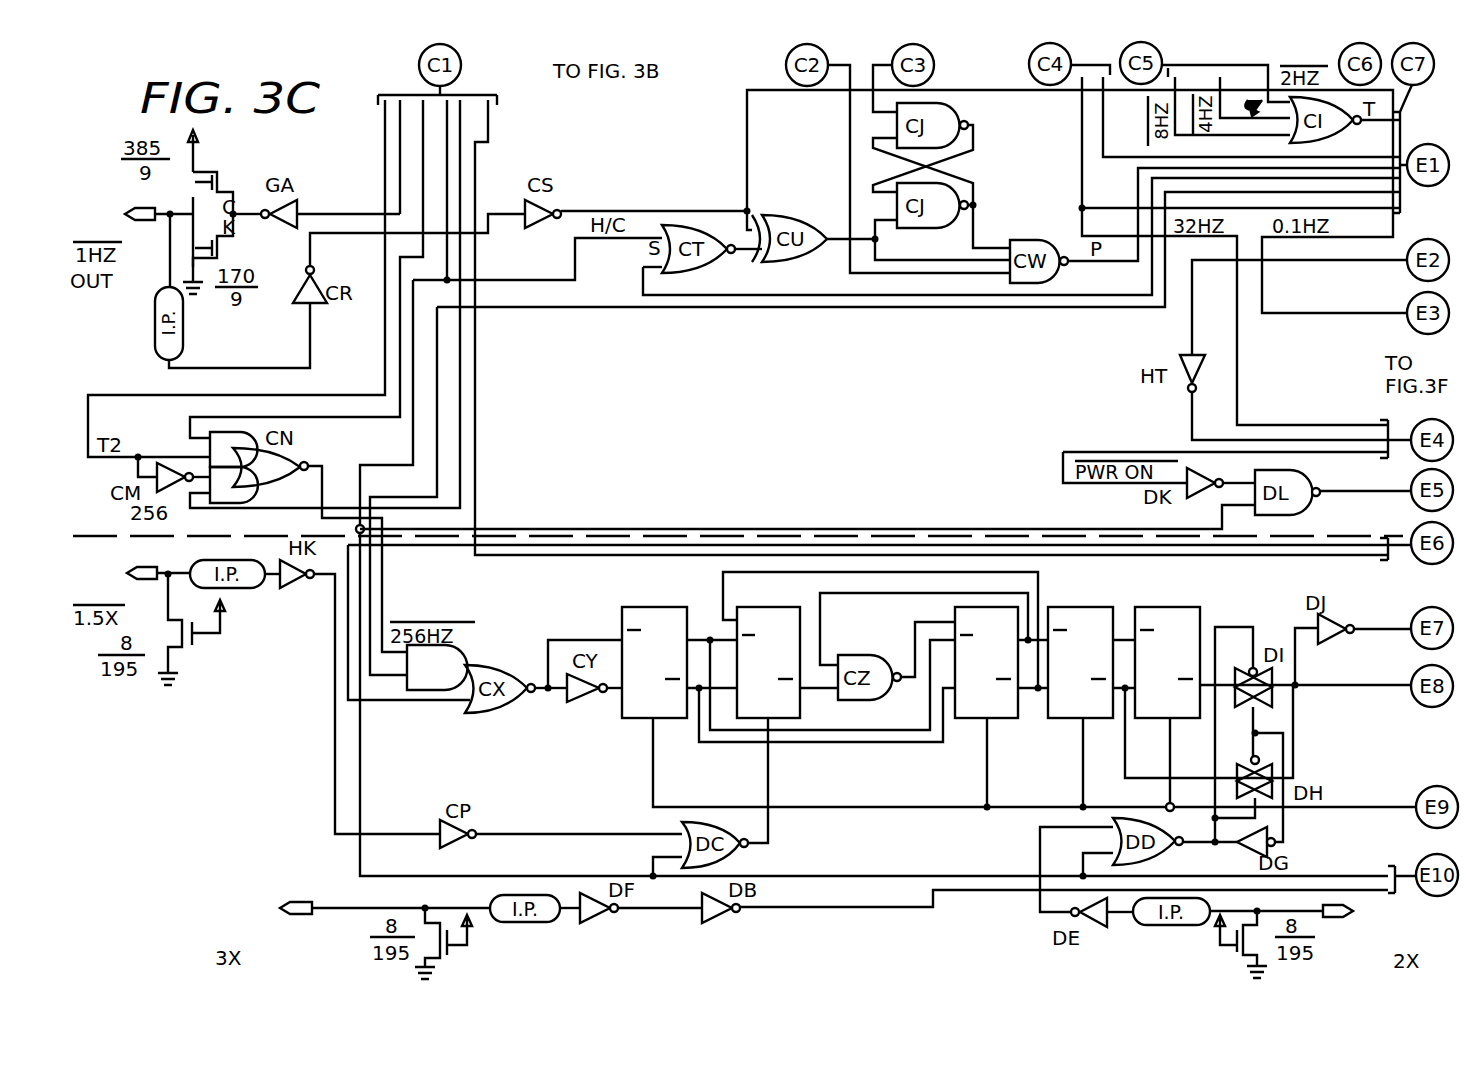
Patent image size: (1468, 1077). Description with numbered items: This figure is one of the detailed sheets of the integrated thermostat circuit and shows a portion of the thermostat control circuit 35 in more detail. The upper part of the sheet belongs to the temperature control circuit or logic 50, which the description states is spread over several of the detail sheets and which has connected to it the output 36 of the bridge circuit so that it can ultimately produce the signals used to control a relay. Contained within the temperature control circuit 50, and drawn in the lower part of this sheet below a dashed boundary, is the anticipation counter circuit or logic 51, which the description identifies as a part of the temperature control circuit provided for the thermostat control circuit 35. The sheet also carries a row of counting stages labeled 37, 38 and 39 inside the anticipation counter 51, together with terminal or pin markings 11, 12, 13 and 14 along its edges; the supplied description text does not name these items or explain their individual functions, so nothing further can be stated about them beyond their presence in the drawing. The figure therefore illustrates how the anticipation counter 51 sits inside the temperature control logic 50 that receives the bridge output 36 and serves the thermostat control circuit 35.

The output pin 11 (1 Hz out) 11 is at (135, 214).
The input pin 12 (1.5X) 12 is at (135, 573).
The input pin 13 (3X) 13 is at (350, 908).
The input pin 14 (2X) 14 is at (1379, 918).
The thermostat control circuit 35 is at (654, 664).
The output of bridge circuit 36 is at (768, 664).
The flip-flop 37 is at (986, 664).
The flip-flop 38 is at (1080, 664).
The flip-flop 39 is at (1167, 664).
The temperature control circuit 50 is at (786, 381).
The anticipation counter circuit 51 is at (147, 880).